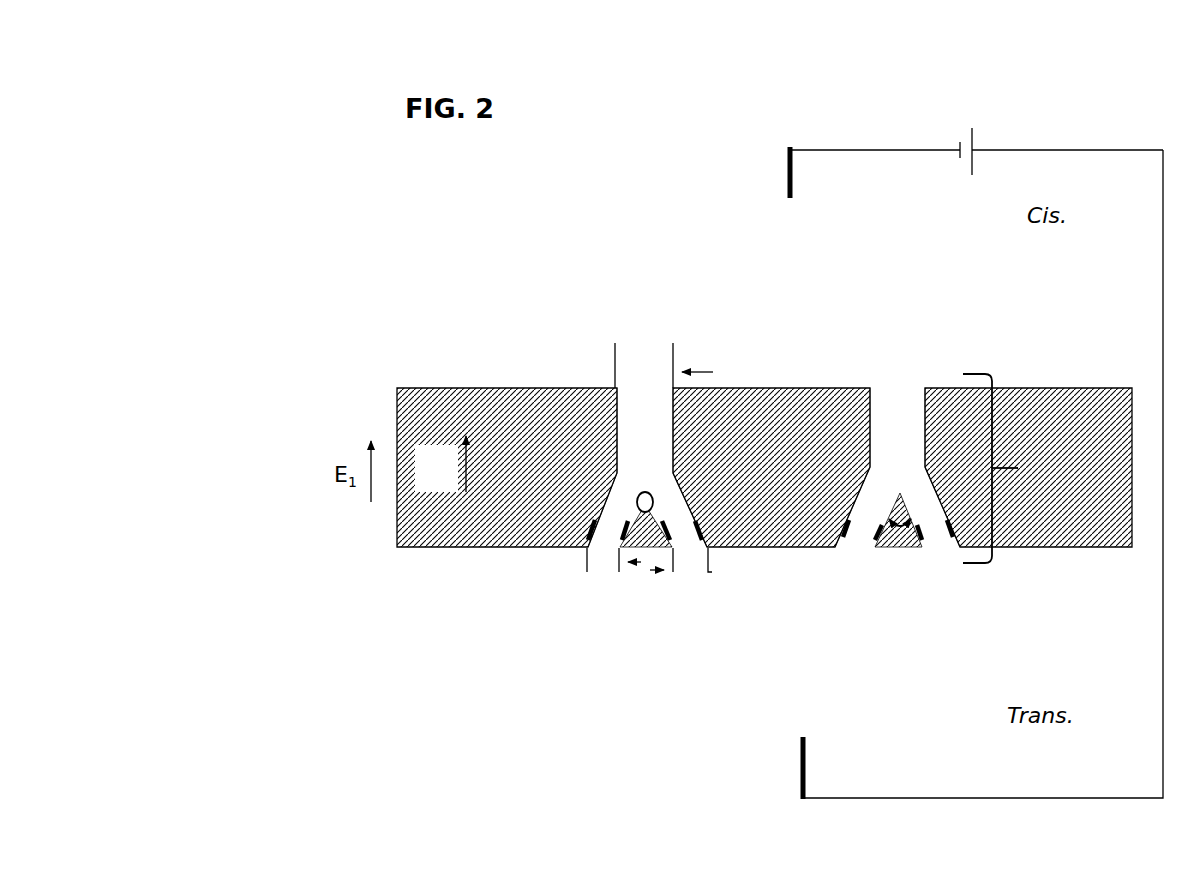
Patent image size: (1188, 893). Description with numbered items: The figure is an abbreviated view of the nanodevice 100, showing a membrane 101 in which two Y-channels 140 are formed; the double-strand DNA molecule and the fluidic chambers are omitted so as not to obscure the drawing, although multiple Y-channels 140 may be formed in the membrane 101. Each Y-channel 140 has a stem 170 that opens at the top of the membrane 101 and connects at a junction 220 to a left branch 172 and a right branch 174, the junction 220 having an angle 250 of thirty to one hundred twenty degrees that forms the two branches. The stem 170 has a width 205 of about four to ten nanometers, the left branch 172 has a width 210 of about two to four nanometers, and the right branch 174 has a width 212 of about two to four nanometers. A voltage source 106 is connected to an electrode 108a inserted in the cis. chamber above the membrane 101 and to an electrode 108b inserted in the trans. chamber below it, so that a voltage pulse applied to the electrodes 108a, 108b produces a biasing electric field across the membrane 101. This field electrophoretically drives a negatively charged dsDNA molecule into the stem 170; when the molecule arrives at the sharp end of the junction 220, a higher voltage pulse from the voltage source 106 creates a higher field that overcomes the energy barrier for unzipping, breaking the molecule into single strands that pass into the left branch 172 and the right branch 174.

The nanodevice 100 is at (258, 134).
The membrane 101 is at (410, 418).
The voltage source 106 is at (957, 128).
The electrode 108a is at (787, 170).
The electrode 108b is at (800, 775).
The Y-channel 140 is at (1018, 468).
The stem 170 is at (645, 391).
The left branch 172 is at (603, 552).
The right branch 174 is at (689, 552).
The width 205 is at (606, 372).
The width 210 is at (578, 562).
The width 212 is at (720, 572).
The junction 220 is at (638, 494).
The angle 250 is at (905, 550).